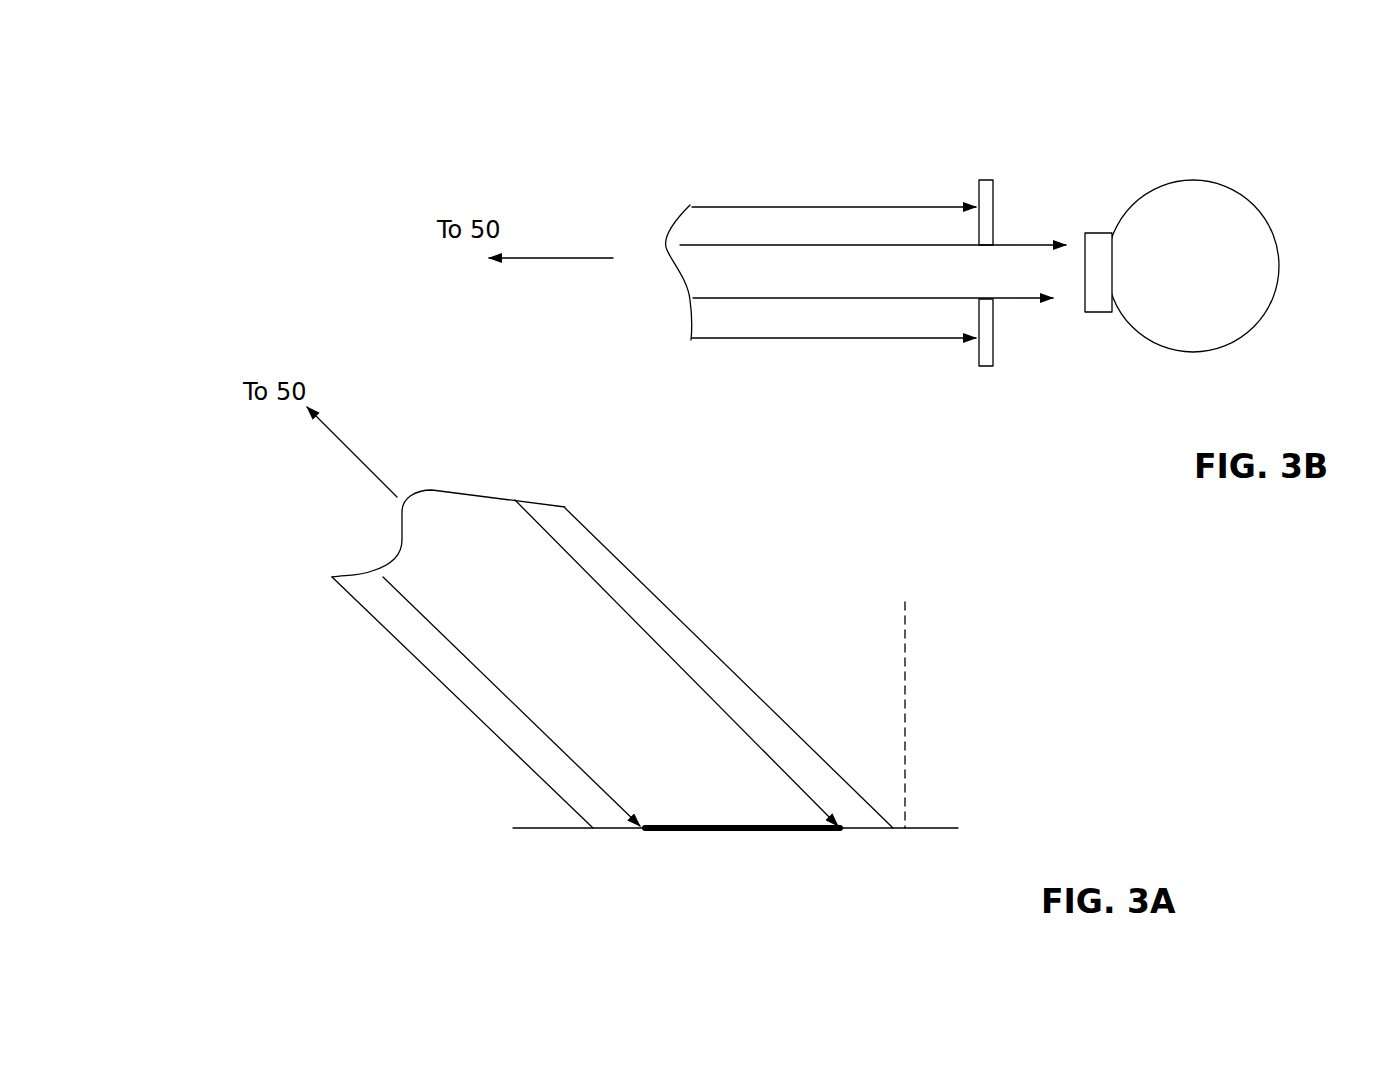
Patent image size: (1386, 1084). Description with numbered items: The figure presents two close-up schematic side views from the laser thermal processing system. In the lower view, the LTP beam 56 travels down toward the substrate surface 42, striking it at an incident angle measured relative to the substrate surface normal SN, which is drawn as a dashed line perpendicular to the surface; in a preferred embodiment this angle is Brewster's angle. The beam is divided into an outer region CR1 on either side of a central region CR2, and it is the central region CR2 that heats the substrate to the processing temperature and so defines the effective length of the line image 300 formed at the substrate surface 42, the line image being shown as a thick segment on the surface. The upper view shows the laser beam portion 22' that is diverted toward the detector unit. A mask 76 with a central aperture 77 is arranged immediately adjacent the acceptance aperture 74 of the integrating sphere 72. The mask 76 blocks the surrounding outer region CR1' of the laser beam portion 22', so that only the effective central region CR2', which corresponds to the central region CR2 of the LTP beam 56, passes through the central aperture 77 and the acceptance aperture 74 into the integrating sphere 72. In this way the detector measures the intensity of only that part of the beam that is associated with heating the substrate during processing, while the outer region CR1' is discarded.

In FIG. 3B, the laser beam portion 22' is at (849, 232).
In FIG. 3B, the mask 76 is at (980, 181).
In FIG. 3B, the central aperture 77 is at (992, 272).
In FIG. 3B, the integrating sphere 72 is at (1175, 180).
In FIG. 3B, the acceptance aperture 74 is at (1091, 305).
In FIG. 3A, the LTP beam 56 is at (423, 668).
In FIG. 3A, the substrate surface 42 is at (920, 828).
In FIG. 3A, the line image 300 is at (737, 832).
In FIG. 3A, the outer region CR1 is at (646, 710).
In FIG. 3A, the central region CR2 is at (722, 603).
In FIG. 3B, the outer region CR1' is at (773, 151).
In FIG. 3B, the central region CR2' is at (1014, 177).
In FIG. 3A, the substrate surface normal SN is at (905, 652).